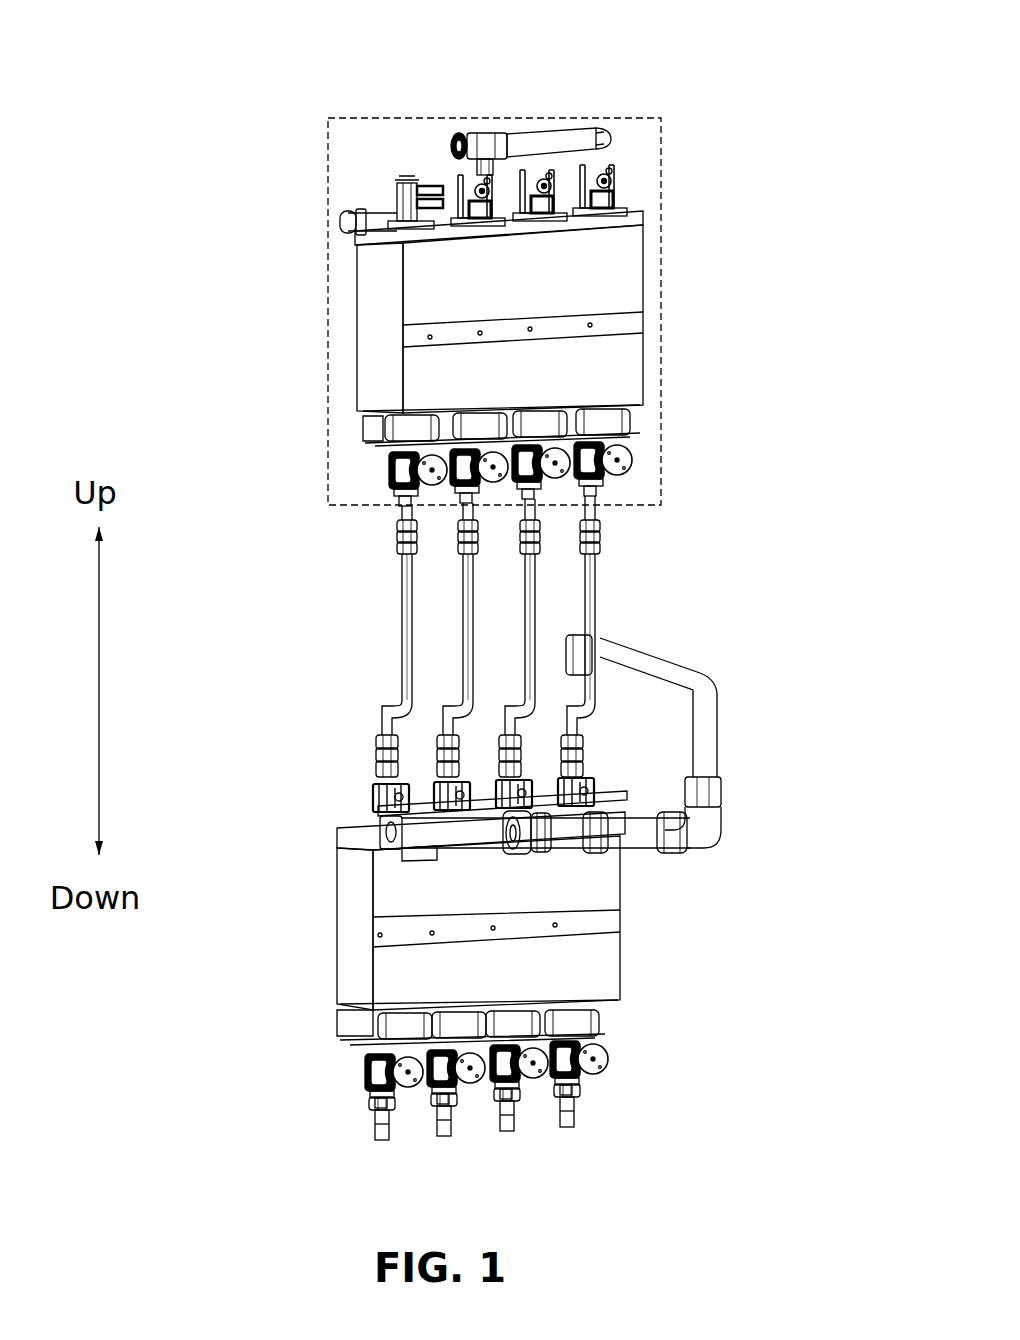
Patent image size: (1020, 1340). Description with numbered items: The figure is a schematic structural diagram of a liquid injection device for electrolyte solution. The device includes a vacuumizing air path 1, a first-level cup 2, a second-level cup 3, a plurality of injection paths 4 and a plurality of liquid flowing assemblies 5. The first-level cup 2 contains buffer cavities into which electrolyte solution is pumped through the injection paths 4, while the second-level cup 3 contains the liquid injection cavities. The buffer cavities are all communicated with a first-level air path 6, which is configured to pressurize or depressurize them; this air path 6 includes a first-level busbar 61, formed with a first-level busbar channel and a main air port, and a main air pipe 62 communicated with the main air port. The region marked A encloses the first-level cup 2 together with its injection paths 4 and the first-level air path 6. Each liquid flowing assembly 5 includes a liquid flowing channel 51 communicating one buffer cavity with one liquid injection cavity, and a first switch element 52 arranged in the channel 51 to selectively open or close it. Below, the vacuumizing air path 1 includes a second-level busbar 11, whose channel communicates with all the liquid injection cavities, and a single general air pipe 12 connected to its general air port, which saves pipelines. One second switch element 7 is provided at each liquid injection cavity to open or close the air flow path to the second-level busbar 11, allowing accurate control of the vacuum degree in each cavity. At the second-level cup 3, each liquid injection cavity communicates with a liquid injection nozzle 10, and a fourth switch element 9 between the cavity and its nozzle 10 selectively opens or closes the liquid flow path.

The vacuumizing air path 1 is at (601, 790).
The second-level busbar 11 is at (455, 830).
The general air pipe 12 is at (706, 753).
The first-level cup 2 is at (420, 288).
The second-level cup 3 is at (347, 933).
The injection paths 4 is at (447, 229).
The liquid flowing assemblies 5 is at (461, 588).
The liquid flowing channel 51 is at (400, 680).
The first switch element 52 is at (399, 500).
The first-level air path 6 is at (475, 117).
The first-level busbar 61 is at (375, 202).
The main air pipe 62 is at (538, 136).
The second switch elements 7 is at (570, 773).
The fourth switch elements 9 is at (482, 1063).
The liquid injection nozzles 10 is at (373, 1120).
The region A is at (637, 116).